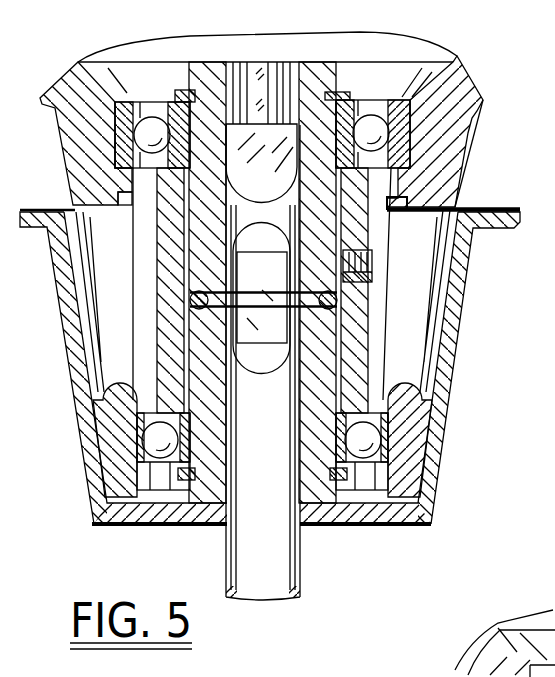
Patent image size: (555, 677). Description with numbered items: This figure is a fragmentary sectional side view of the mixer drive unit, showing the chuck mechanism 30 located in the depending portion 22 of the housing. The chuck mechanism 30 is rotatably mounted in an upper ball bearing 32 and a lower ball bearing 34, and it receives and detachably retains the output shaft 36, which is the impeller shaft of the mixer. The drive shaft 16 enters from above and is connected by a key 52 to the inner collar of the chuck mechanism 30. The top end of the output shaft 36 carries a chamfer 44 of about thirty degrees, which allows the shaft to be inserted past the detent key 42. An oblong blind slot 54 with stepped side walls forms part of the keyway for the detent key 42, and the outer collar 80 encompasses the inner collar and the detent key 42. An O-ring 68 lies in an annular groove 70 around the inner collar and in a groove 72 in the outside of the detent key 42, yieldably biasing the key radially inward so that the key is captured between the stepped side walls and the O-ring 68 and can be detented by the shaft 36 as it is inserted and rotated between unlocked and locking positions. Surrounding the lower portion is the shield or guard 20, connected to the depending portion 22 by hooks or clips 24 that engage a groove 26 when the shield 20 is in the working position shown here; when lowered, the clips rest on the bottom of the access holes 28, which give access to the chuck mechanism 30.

The shaft 16 is at (244, 62).
The key 52 is at (259, 65).
The chamfer 44 is at (333, 84).
The ball bearing 32 is at (468, 72).
The depending portion 22 is at (459, 129).
The groove 26 is at (458, 163).
The hooks or clips 24 is at (458, 207).
The chuck mechanism 30 is at (380, 288).
The detent key 42 is at (278, 331).
The outer collar 80 is at (364, 357).
The access holes 28 is at (110, 366).
The shield or guard 20 is at (450, 428).
The ball bearing 34 is at (381, 450).
The output shaft 36 is at (276, 566).
The blind slot 54 is at (281, 221).
The groove 72 is at (240, 262).
The O-ring 68 is at (190, 300).
The annular groove 70 is at (197, 292).